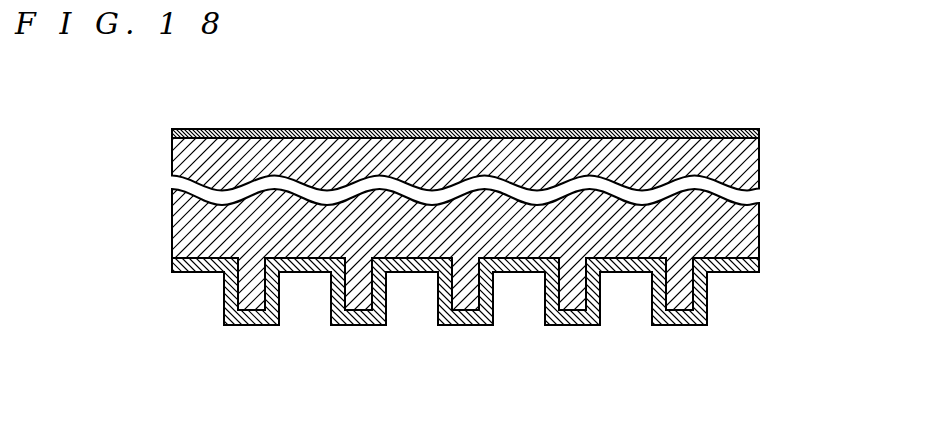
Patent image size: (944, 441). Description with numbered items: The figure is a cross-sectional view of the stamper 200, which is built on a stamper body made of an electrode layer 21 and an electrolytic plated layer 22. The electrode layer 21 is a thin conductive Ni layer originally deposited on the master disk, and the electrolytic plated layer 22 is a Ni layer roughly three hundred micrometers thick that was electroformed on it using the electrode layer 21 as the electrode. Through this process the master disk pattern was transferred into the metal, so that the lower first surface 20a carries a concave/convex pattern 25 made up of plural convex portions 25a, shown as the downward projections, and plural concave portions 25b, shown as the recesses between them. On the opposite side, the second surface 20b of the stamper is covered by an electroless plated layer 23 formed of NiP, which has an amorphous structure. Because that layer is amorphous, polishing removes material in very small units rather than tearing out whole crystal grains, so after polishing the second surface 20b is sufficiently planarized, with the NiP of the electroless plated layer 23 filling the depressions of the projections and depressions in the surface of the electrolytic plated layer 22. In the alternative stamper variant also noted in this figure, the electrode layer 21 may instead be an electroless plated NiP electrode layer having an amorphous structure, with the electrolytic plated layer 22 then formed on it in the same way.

The stamper 200 is at (490, 90).
The electroless plated layer 23 is at (760, 131).
The second surface 20b is at (257, 121).
The electrolytic plated layer 22 is at (760, 173).
The electrode layer 21 is at (760, 262).
The first surface 20a is at (257, 341).
The concave/convex pattern 25 is at (388, 348).
The convex portions 25a is at (360, 288).
The concave portions 25b is at (410, 290).